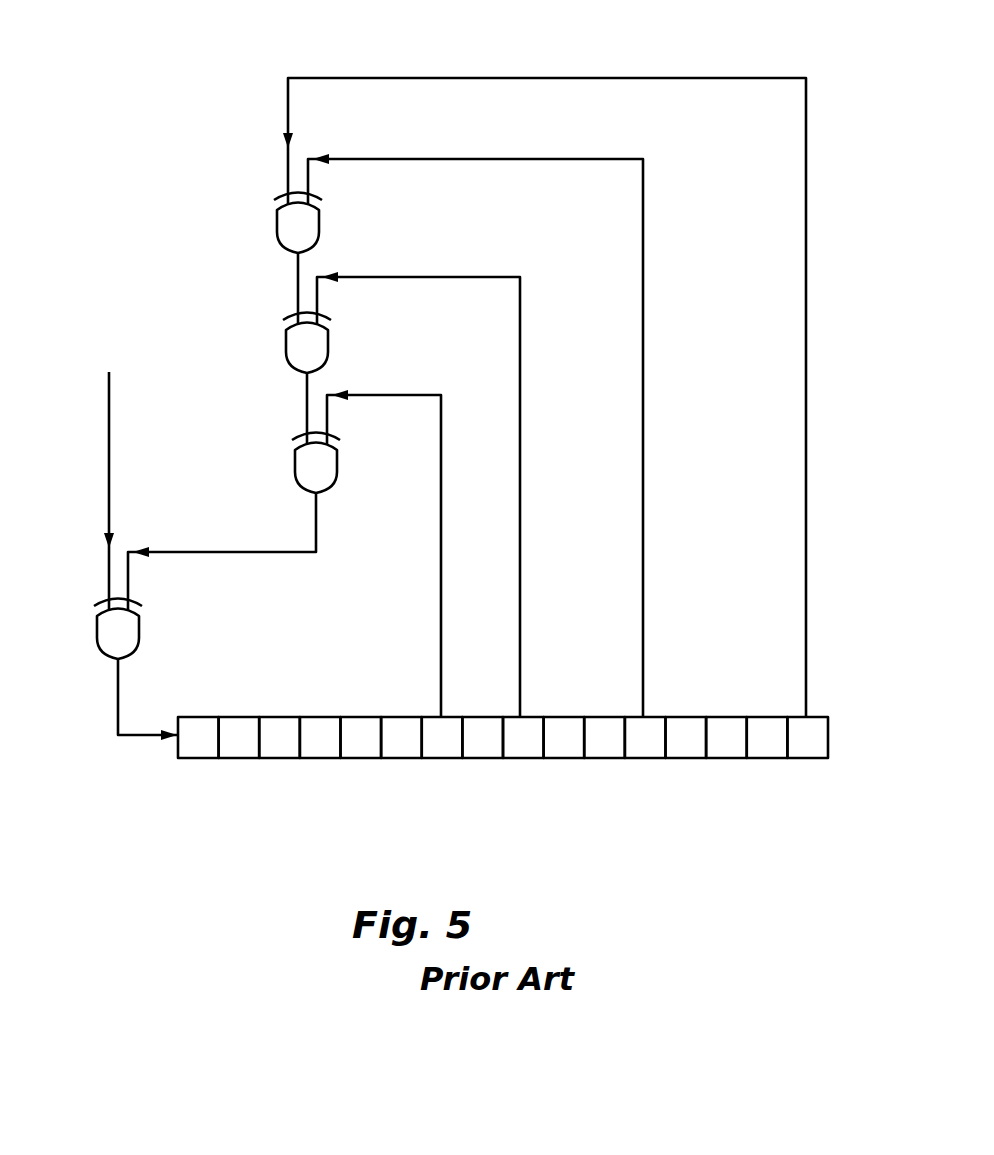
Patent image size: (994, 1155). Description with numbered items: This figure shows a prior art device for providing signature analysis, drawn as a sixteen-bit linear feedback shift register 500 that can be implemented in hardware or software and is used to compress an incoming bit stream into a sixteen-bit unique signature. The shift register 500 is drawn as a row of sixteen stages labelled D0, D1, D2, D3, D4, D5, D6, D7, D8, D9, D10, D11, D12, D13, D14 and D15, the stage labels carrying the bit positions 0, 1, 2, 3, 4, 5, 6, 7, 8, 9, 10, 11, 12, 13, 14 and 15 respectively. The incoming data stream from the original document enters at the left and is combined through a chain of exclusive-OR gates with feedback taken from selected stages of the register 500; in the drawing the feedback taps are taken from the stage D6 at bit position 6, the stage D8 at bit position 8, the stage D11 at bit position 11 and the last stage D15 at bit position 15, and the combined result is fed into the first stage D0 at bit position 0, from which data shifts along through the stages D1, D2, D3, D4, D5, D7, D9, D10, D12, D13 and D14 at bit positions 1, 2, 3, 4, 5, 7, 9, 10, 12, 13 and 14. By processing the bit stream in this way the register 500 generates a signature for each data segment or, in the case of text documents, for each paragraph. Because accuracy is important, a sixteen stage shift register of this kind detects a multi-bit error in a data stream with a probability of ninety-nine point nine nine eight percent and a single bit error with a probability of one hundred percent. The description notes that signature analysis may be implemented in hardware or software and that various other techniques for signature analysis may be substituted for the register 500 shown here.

The linear feedback shift register (prior art CRC generator) 500 is at (429, 458).
The register bit D0 is at (198, 737).
The register bit D1 is at (239, 737).
The register bit D2 is at (279, 737).
The register bit D3 is at (320, 737).
The register bit D4 is at (361, 737).
The register bit D5 is at (401, 737).
The register bit D6 is at (442, 737).
The register bit D7 is at (482, 737).
The register bit D8 is at (523, 737).
The register bit D9 is at (564, 737).
The register bit D10 is at (604, 737).
The register bit D11 is at (645, 737).
The register bit D12 is at (686, 737).
The register bit D13 is at (726, 737).
The register bit D14 is at (767, 737).
The register bit D15 is at (807, 737).
The register bit D0 0 is at (198, 737).
The register bit D1 1 is at (239, 737).
The register bit D2 2 is at (279, 737).
The register bit D3 3 is at (320, 737).
The register bit D4 4 is at (361, 737).
The register bit D5 5 is at (401, 737).
The register bit D6 6 is at (442, 737).
The register bit D7 7 is at (482, 737).
The register bit D8 8 is at (523, 737).
The register bit D9 9 is at (564, 737).
The register bit D10 10 is at (604, 737).
The register bit D11 11 is at (645, 737).
The register bit D12 12 is at (686, 737).
The register bit D13 13 is at (726, 737).
The register bit D14 14 is at (767, 737).
The register bit D15 15 is at (807, 737).